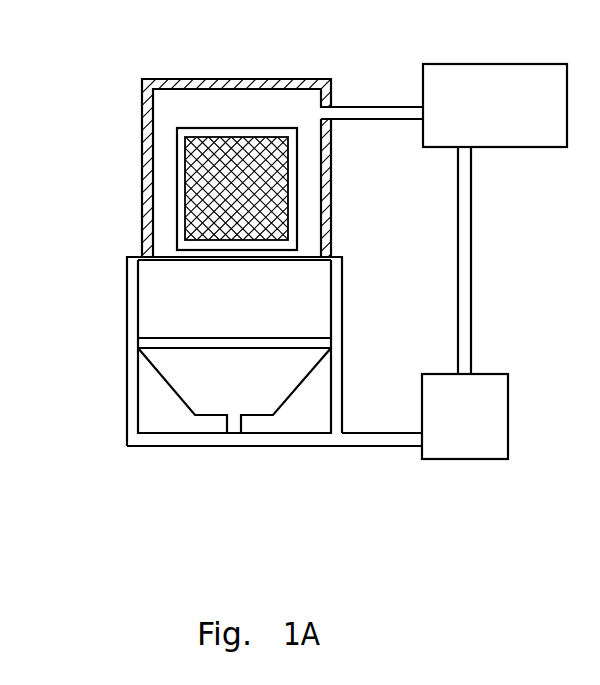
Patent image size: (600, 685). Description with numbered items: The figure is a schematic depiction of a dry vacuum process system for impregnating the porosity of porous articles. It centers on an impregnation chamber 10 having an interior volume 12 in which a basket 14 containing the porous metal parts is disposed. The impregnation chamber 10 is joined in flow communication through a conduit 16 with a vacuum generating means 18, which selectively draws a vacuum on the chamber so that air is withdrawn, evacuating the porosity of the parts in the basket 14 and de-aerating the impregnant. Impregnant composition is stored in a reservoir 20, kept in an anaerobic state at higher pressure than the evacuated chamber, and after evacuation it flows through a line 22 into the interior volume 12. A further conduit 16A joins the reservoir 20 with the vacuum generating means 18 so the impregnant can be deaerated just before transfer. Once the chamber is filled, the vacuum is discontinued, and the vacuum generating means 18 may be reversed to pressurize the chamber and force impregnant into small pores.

The impregnation chamber 10 is at (142, 162).
The interior volume 12 is at (272, 110).
The basket 14 is at (208, 145).
The conduit 16 is at (373, 120).
The conduit 16A is at (457, 282).
The vacuum generating means 18 is at (533, 125).
The reservoir 20 is at (465, 447).
The line 22 is at (387, 438).